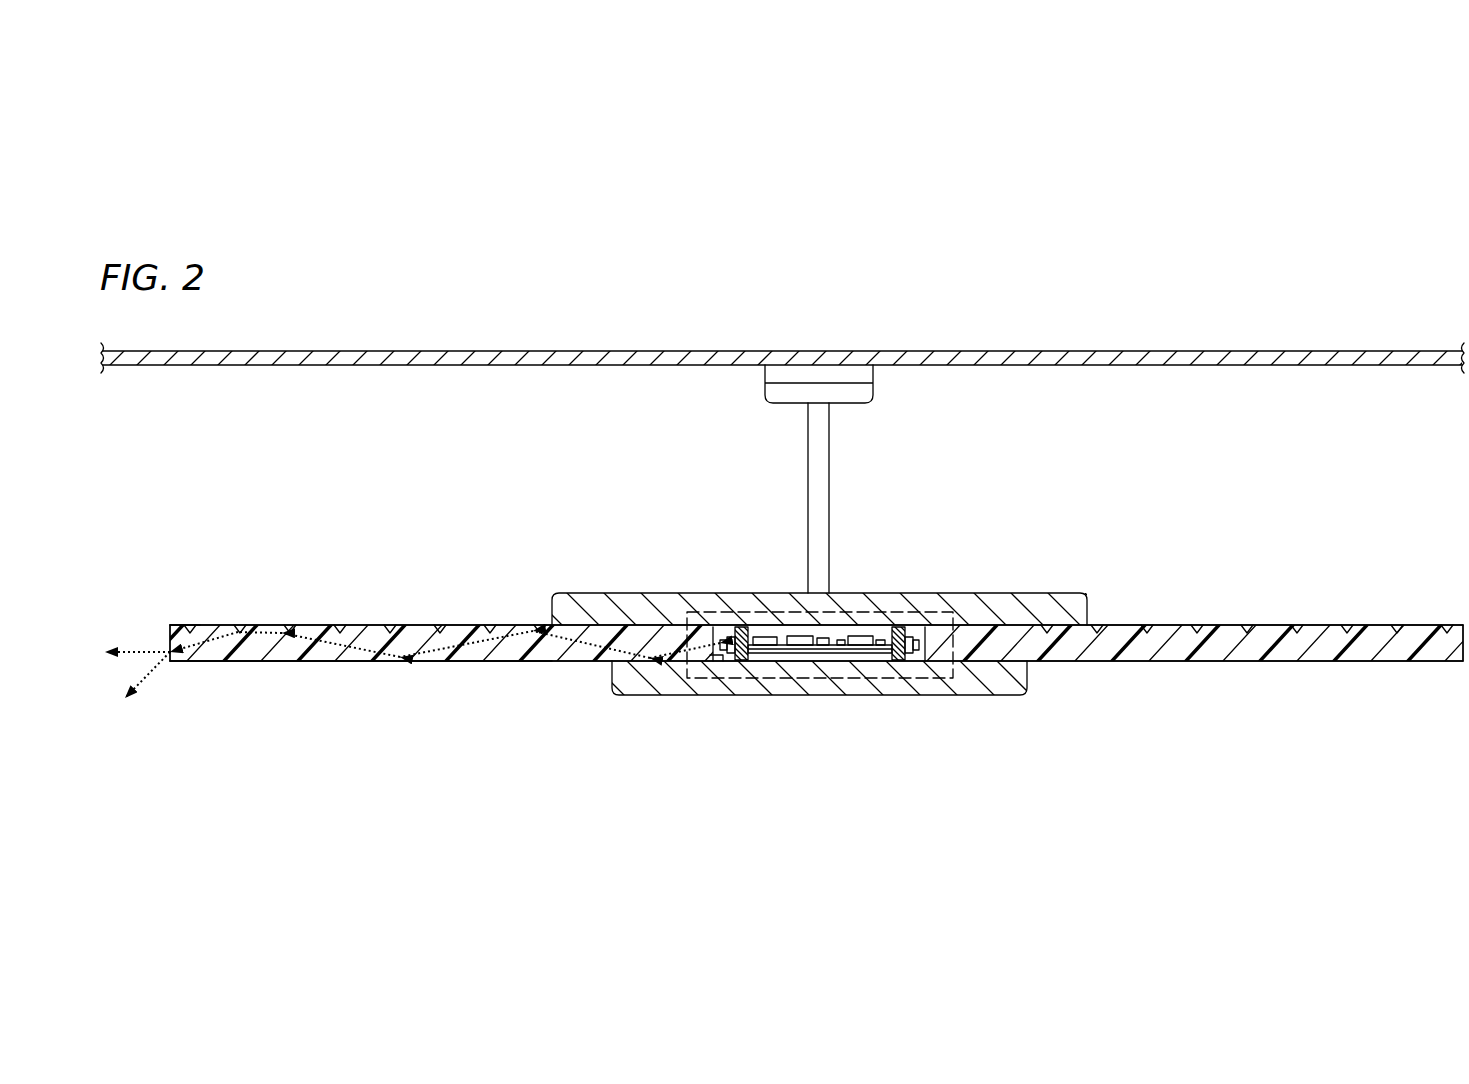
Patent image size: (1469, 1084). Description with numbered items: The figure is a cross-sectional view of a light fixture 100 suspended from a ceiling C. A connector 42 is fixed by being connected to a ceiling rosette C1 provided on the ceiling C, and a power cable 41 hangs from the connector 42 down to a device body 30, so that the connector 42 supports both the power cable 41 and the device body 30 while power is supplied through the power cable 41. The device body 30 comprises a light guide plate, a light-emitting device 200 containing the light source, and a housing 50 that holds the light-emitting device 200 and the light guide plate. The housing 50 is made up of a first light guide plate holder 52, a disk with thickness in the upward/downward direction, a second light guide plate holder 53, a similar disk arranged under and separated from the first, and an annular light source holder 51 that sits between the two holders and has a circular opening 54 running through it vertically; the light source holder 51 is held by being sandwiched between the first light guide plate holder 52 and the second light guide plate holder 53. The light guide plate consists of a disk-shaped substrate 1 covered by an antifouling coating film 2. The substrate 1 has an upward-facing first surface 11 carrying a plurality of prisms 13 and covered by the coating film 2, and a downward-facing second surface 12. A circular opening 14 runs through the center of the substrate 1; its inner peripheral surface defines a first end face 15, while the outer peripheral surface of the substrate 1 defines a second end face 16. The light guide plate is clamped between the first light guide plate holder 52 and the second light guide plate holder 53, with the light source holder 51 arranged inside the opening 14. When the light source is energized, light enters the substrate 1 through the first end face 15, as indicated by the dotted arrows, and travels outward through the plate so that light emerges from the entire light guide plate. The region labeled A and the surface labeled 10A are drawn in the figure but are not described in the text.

The substrate 1 is at (553, 662).
The antifouling coating film 2 is at (455, 624).
The light emitting surface 10A is at (282, 663).
The first surface 11 is at (490, 625).
The second surface 12 is at (478, 662).
The prisms 13 is at (190, 628).
The opening 14 is at (908, 658).
The first end face 15 is at (720, 660).
The second end face 16 is at (170, 643).
The device body 30 is at (180, 622).
The power cable 41 is at (820, 473).
The connector 42 is at (865, 395).
The housing 50 is at (823, 600).
The light source holder 51 is at (896, 603).
The first light guide plate holder 52 is at (1027, 612).
The second light guide plate holder 53 is at (986, 672).
The circular opening 54 is at (783, 634).
The light fixture 100 is at (625, 528).
The light-emitting device 200 is at (723, 627).
The region A is at (823, 680).
The ceiling C is at (305, 358).
The ceiling rosette C1 is at (770, 370).